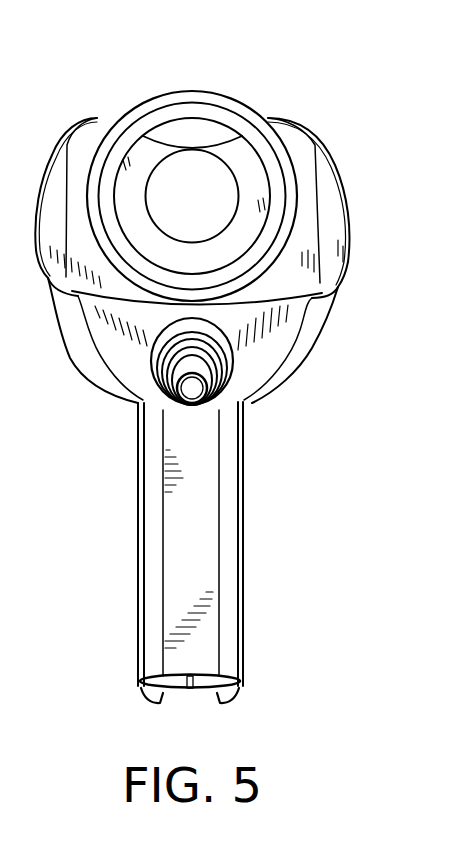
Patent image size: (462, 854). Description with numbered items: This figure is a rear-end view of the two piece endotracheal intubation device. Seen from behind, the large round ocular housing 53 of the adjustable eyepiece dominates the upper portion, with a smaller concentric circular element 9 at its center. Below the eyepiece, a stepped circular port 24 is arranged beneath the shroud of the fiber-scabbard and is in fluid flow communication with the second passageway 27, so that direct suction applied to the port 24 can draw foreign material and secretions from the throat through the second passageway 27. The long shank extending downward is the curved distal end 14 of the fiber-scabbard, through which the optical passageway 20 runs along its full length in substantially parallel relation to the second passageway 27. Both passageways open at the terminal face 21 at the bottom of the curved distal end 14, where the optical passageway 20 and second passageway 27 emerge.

The ocular housing 53 is at (198, 110).
The lens 9 is at (205, 196).
The port 24 is at (240, 374).
The optical passageway 20 is at (177, 392).
The curved distal end 14 is at (270, 553).
The second passageway 27 is at (240, 688).
The terminal face 21 is at (182, 690).